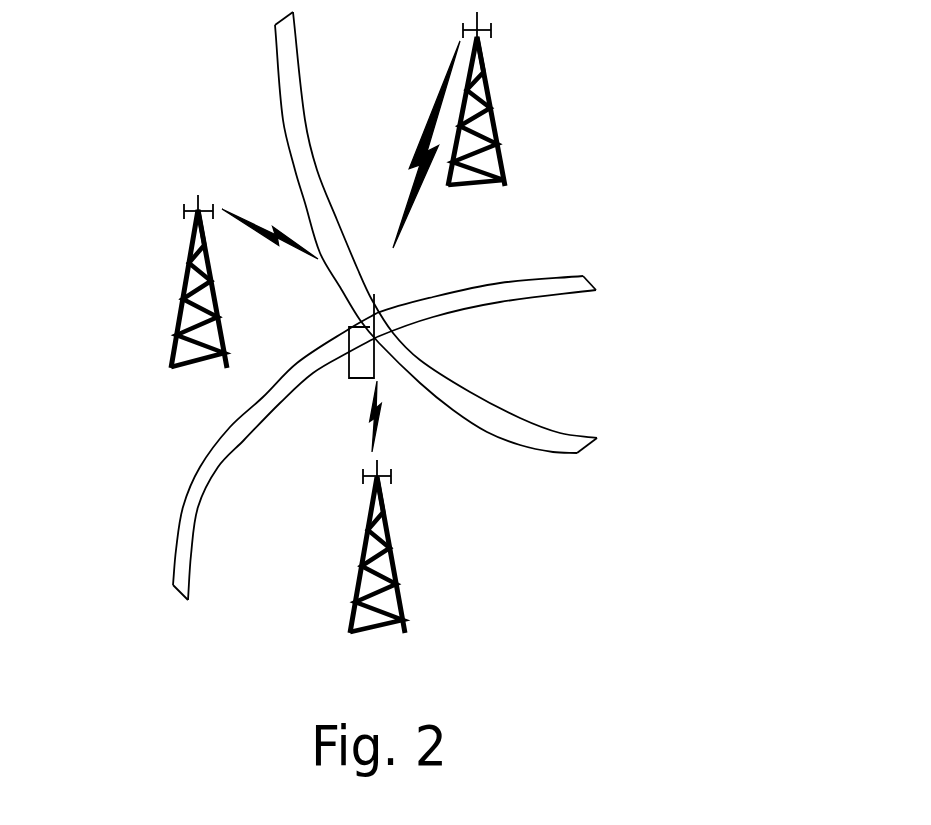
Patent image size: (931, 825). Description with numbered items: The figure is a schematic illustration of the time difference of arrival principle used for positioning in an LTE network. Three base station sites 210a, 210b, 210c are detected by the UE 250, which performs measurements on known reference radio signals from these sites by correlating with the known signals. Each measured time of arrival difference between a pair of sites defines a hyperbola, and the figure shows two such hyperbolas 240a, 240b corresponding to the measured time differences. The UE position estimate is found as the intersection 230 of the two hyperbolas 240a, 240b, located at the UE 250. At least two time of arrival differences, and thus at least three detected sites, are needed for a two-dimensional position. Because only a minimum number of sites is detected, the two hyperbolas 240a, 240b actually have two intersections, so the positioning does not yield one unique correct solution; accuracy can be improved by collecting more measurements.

The site 210a is at (172, 337).
The site 210b is at (506, 163).
The site 210c is at (355, 605).
The intersection 230 is at (388, 323).
The hyperbola 240a is at (179, 556).
The hyperbola 240b is at (284, 47).
The UE 250 is at (362, 370).